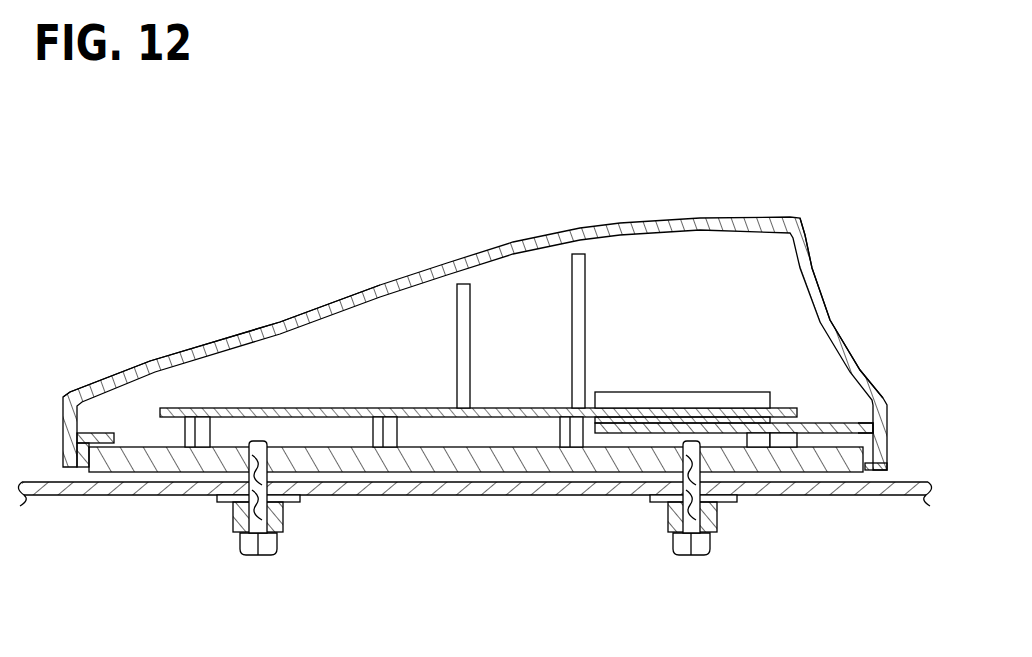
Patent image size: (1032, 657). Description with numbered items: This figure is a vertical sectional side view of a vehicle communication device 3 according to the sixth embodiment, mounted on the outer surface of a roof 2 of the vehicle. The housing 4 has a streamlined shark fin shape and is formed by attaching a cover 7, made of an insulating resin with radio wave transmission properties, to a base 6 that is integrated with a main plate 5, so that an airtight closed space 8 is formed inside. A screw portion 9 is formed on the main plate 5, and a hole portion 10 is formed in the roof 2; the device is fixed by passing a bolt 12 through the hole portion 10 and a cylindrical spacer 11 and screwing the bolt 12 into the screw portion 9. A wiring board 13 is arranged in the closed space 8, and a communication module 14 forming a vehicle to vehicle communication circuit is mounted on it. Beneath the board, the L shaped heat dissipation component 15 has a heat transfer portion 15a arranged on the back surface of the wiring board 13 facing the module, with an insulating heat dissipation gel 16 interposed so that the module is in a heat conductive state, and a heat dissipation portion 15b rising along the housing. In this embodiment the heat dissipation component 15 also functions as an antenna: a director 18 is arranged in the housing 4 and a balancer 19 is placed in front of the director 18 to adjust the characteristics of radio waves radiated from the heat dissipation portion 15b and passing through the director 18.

The roof 2 is at (855, 497).
The vehicle communication device 3 is at (485, 290).
The housing 4 is at (681, 216).
The main plate 5 is at (462, 473).
The base 6 is at (880, 478).
The cover 7 is at (373, 290).
The closed space 8 is at (662, 288).
The screw portion 9 is at (268, 475).
The hole portion 10 is at (280, 527).
The cylindrical spacer 11 is at (233, 514).
The bolt 12 is at (258, 556).
The wiring board 13 is at (327, 407).
The communication module 14 is at (686, 391).
The heat dissipation component 15 is at (830, 426).
The heat transfer portion 15a is at (858, 424).
The heat dissipation portion 15b is at (818, 278).
The heat dissipation gel 16 is at (800, 417).
The director 18 is at (572, 342).
The balancer 19 is at (457, 342).